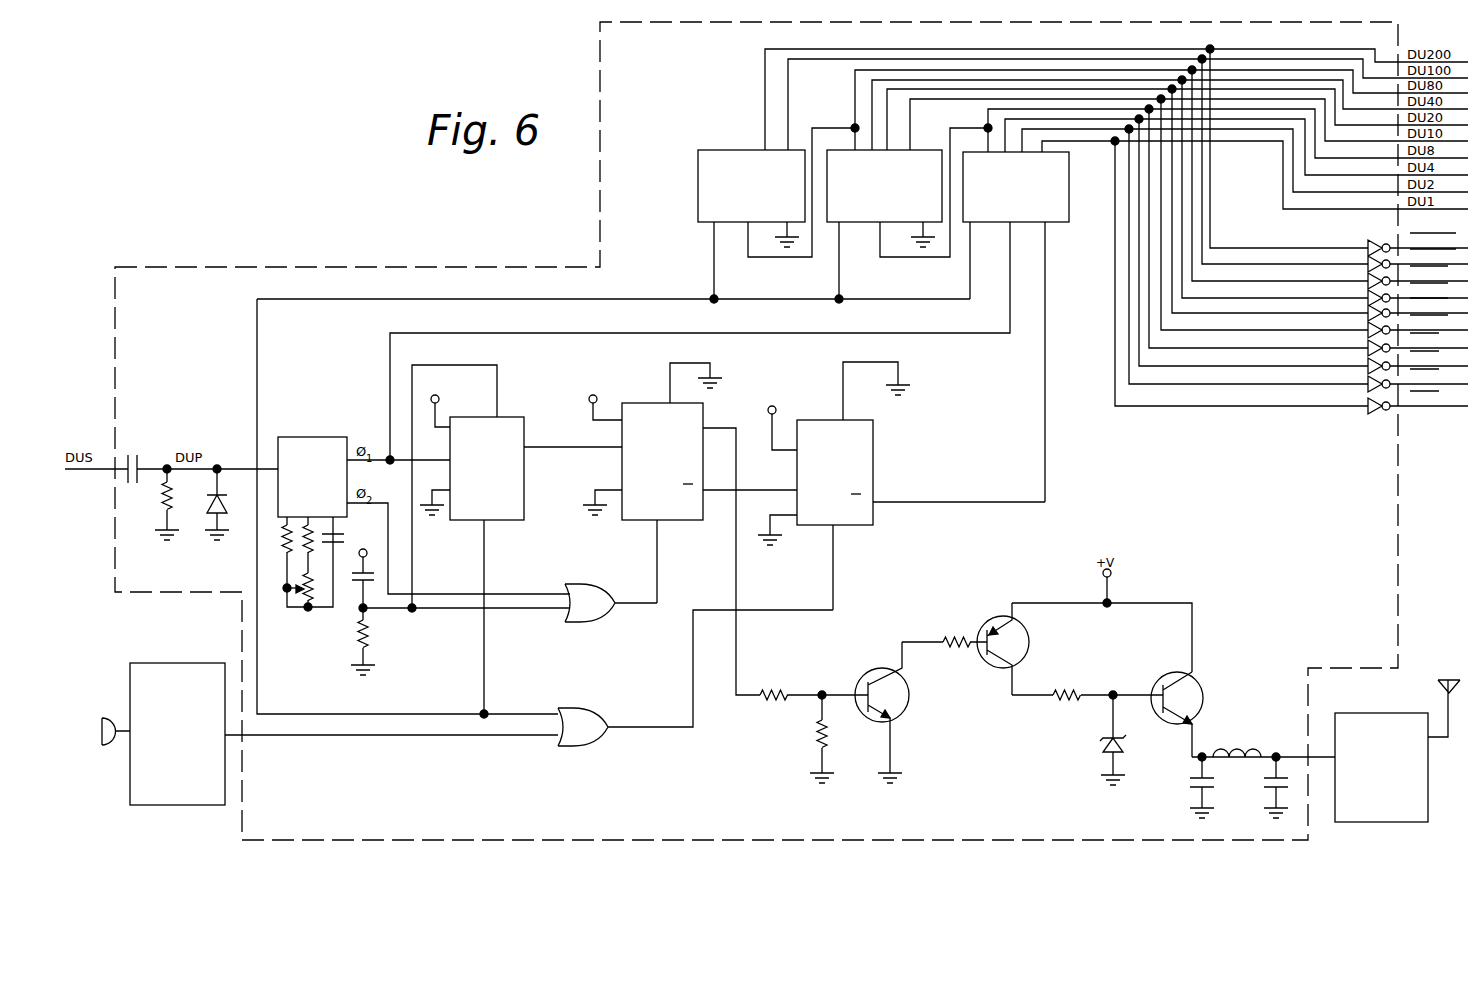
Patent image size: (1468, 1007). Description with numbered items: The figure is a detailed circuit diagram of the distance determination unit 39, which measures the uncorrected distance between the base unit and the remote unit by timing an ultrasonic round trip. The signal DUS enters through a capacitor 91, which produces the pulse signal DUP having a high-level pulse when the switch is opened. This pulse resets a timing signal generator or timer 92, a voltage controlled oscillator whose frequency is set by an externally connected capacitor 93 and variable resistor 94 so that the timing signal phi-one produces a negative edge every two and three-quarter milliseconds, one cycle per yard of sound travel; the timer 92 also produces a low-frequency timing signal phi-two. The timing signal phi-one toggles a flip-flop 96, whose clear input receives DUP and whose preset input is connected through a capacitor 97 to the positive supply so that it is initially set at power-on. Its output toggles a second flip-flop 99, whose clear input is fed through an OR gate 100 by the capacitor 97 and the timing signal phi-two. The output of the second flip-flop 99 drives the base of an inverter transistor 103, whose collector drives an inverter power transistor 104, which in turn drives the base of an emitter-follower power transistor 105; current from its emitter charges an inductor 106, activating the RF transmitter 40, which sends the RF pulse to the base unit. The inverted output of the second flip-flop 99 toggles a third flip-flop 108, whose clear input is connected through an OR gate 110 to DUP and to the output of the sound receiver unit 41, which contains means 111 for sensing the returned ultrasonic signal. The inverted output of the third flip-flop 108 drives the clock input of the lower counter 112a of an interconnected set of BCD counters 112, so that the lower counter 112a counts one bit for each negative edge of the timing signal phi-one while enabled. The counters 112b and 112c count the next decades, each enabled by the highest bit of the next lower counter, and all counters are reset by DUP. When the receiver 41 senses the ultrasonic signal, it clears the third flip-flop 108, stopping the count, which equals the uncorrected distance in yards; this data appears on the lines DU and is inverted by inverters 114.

The distance determination unit 39 is at (556, 266).
The RF transmitter 40 is at (1380, 822).
The sound receiver unit 41 is at (172, 805).
The capacitor 91 is at (133, 452).
The timing signal generator or timer 92 is at (313, 437).
The capacitor 93 is at (338, 548).
The variable resistor 94 is at (298, 593).
The flip-flop 96 is at (524, 506).
The capacitor 97 is at (358, 583).
The second flip-flop 99 is at (680, 520).
The OR gate 100 is at (600, 619).
The inverter transistor 103 is at (872, 670).
The inverter power transistor 104 is at (988, 621).
The power transistor 105 is at (1205, 693).
The inductor 106 is at (1226, 753).
The third flip-flop 108 is at (873, 450).
The OR gate 110 is at (596, 743).
The means for sensing the ultrasonic signal 111 is at (108, 714).
The interconnected set of BCD counters 112 is at (756, 313).
The lower counter 112a is at (1069, 188).
The counter 112b is at (860, 222).
The counter 112c is at (698, 203).
The inverters 114 is at (1376, 414).